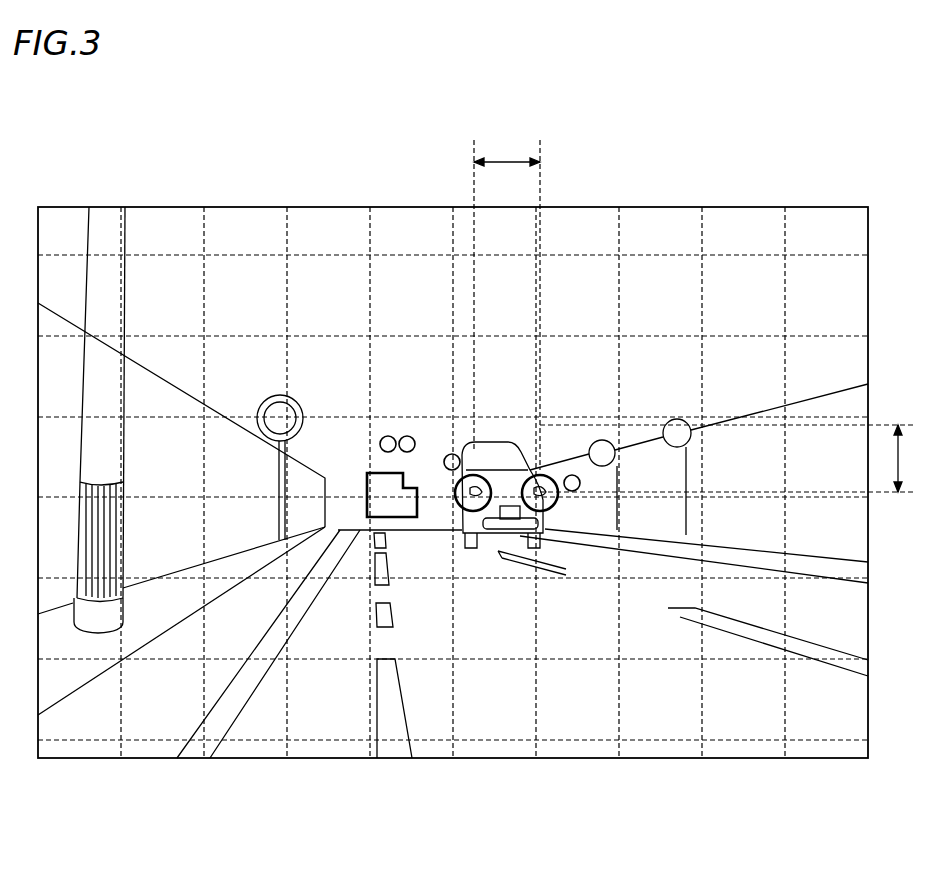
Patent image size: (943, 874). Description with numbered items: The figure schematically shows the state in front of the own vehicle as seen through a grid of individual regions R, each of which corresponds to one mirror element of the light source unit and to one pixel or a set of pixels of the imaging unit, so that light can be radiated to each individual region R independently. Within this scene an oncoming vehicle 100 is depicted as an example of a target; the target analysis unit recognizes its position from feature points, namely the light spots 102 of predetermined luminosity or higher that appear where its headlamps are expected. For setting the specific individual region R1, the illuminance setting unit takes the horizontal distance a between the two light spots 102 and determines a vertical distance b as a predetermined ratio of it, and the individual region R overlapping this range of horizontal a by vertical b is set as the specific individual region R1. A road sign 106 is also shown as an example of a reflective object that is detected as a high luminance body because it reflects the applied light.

The oncoming vehicle 100 is at (513, 548).
The light spot 102 is at (475, 549).
The road sign 106 is at (270, 447).
The individual region R is at (738, 228).
The specific individual region R1 is at (462, 438).
The horizontal distance a is at (507, 303).
The vertical distance b is at (731, 458).